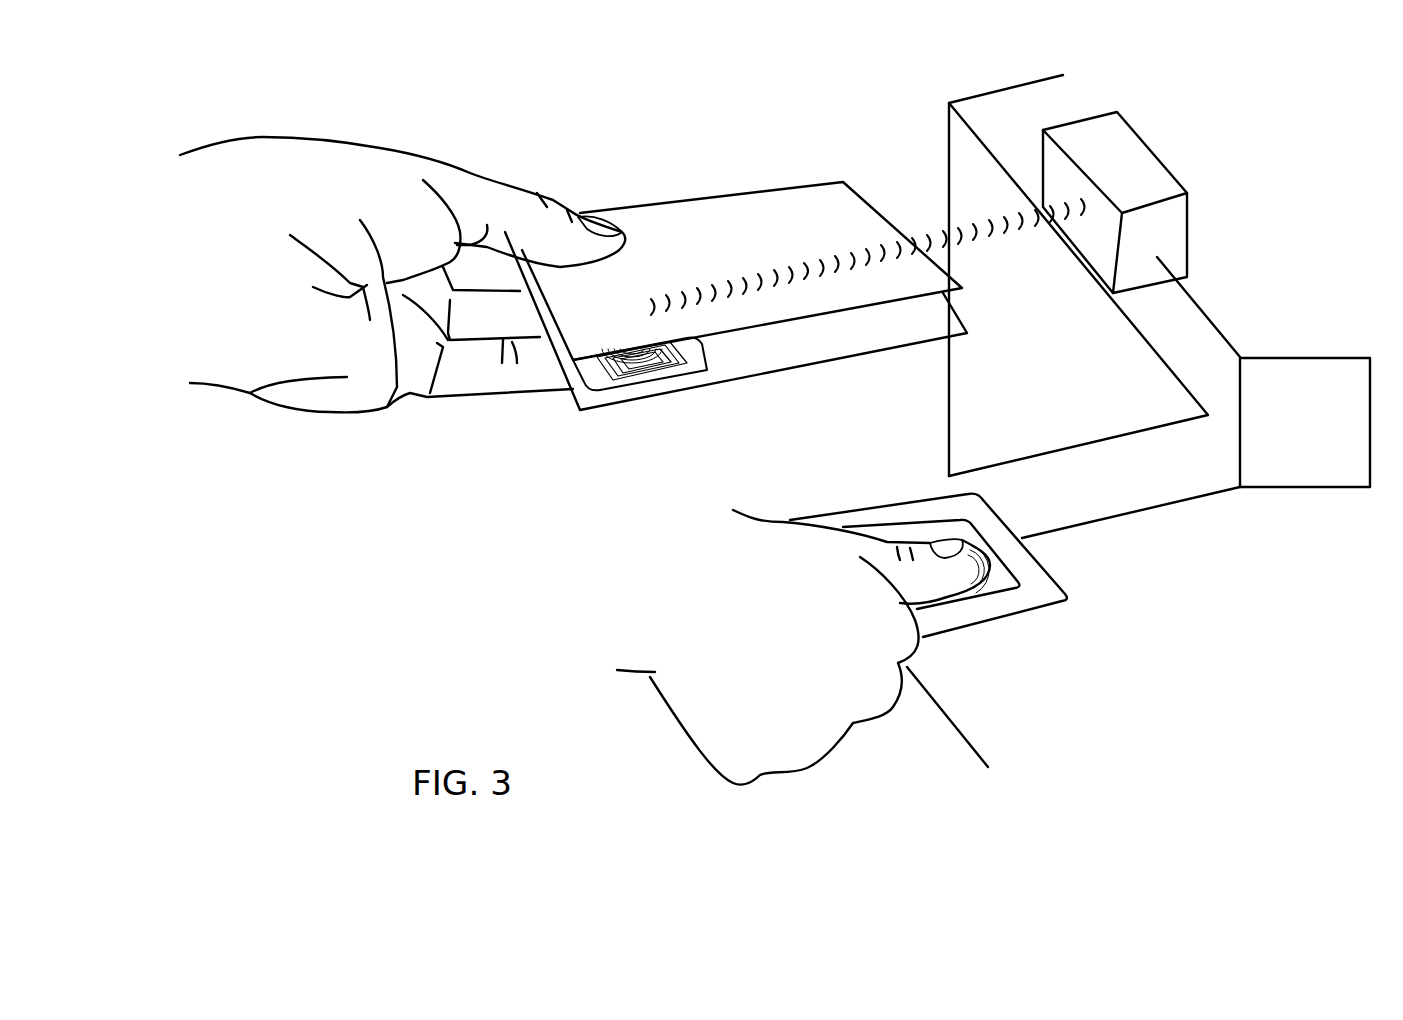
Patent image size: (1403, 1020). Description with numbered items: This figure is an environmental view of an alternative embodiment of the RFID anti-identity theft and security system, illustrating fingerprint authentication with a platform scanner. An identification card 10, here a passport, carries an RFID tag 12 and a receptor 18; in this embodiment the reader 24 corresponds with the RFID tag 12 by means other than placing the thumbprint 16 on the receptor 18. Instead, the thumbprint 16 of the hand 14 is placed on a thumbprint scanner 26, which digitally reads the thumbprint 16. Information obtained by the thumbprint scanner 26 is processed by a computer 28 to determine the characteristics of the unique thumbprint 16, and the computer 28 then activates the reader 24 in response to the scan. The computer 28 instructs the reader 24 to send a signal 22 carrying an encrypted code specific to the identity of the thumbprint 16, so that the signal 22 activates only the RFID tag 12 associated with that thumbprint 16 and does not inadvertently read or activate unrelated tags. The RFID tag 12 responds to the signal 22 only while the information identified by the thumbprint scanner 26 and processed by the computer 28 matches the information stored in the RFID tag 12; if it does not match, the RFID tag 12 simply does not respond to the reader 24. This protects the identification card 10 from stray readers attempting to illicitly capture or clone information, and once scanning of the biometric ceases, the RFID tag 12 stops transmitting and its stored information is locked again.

The identification card 10 is at (715, 218).
The RFID tag 12 is at (698, 363).
The receptor 18 is at (627, 360).
The signal 22 is at (937, 237).
The reader 24 is at (1140, 158).
The computer 28 is at (1292, 480).
The thumbprint scanner 26 is at (1007, 585).
The thumbprint 16 is at (960, 587).
The hand 14 is at (715, 745).